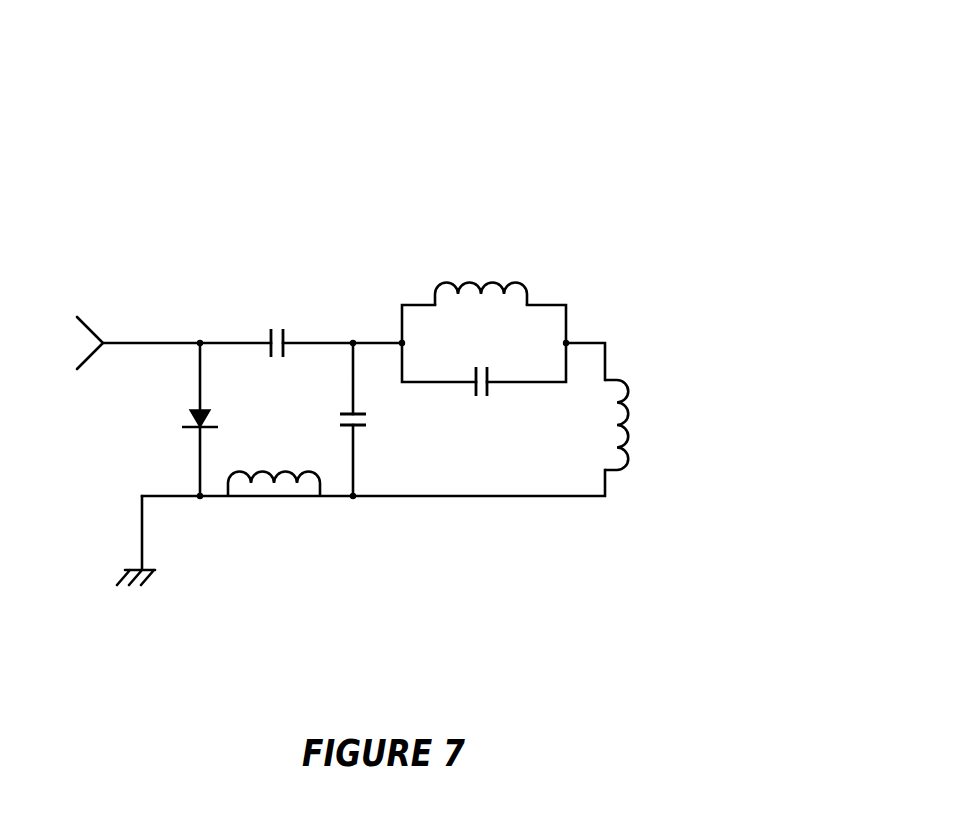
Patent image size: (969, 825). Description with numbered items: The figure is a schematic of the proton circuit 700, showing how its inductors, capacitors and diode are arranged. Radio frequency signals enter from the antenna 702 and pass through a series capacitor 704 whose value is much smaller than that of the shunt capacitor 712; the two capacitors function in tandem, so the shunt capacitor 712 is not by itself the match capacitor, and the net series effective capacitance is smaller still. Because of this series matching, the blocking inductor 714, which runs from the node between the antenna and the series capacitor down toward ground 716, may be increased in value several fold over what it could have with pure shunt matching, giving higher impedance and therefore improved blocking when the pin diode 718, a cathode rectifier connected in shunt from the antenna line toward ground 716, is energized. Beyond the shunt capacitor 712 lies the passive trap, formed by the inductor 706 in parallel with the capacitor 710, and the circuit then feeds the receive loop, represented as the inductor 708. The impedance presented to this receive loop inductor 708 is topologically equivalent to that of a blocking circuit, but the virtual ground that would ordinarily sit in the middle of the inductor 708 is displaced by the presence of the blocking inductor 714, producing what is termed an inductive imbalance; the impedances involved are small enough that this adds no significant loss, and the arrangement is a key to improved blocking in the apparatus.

The proton circuit 700 is at (714, 131).
The antenna 702 is at (103, 327).
The series capacitor 704 is at (283, 330).
The inductor 706 is at (527, 293).
The receive loop inductor 708 is at (630, 393).
The capacitor 710 is at (487, 391).
The shunt capacitor 712 is at (360, 427).
The blocking inductor 714 is at (257, 474).
The ground 716 is at (117, 578).
The pin diode 718 is at (188, 421).